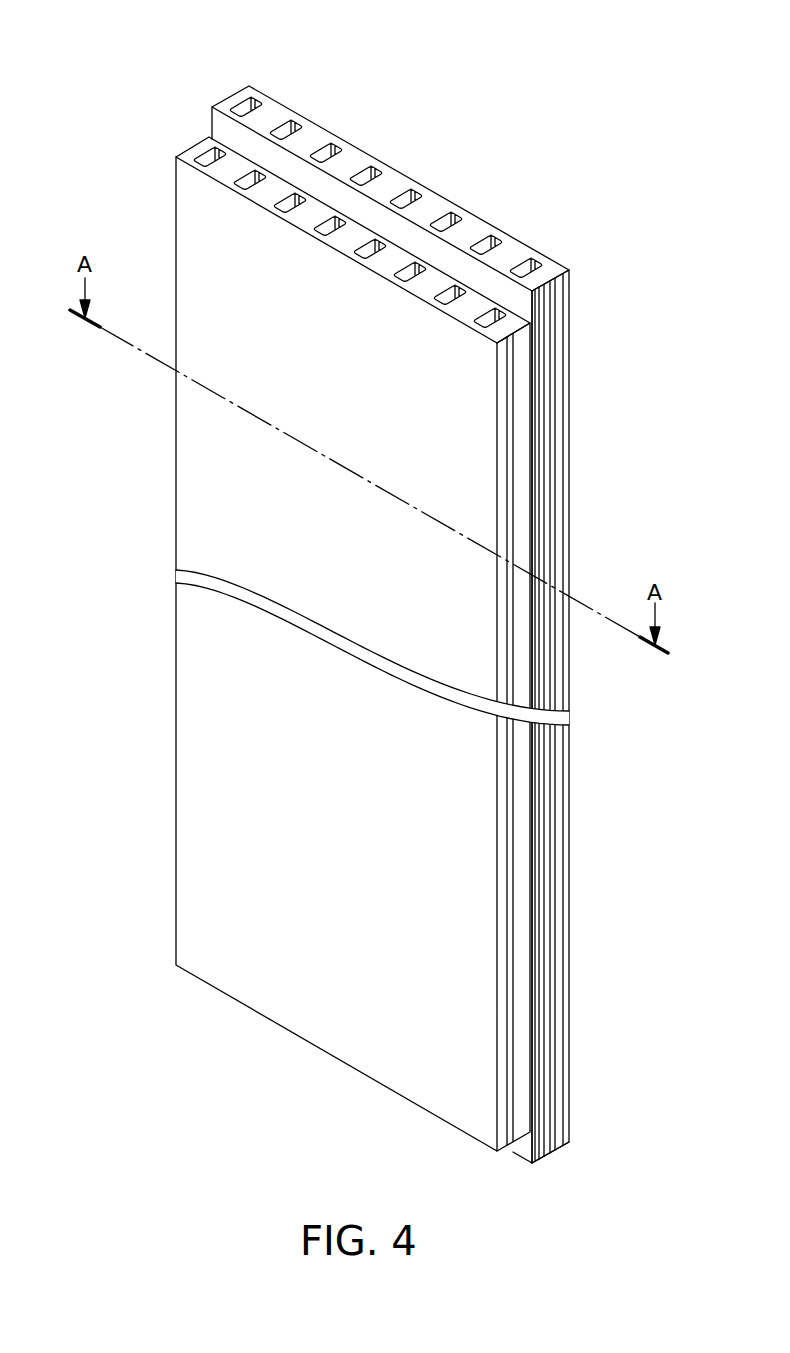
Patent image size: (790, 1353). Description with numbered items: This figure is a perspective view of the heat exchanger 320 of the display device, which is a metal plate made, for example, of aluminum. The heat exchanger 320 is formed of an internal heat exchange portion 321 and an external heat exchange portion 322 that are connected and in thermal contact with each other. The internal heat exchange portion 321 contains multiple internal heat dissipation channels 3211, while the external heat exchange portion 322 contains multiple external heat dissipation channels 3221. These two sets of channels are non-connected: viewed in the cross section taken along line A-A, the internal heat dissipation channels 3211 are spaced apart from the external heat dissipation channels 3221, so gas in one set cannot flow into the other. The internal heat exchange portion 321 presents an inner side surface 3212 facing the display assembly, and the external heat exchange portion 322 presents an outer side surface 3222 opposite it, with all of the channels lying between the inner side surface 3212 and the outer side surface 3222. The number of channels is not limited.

The heat exchanger 320 is at (108, 40).
The internal heat exchange portion 321 is at (163, 219).
The internal heat dissipation channels 3211 is at (213, 168).
The inner side surface 3212 is at (220, 465).
The external heat exchange portion 322 is at (580, 284).
The external heat dissipation channels 3221 is at (262, 118).
The outer side surface 3222 is at (572, 400).